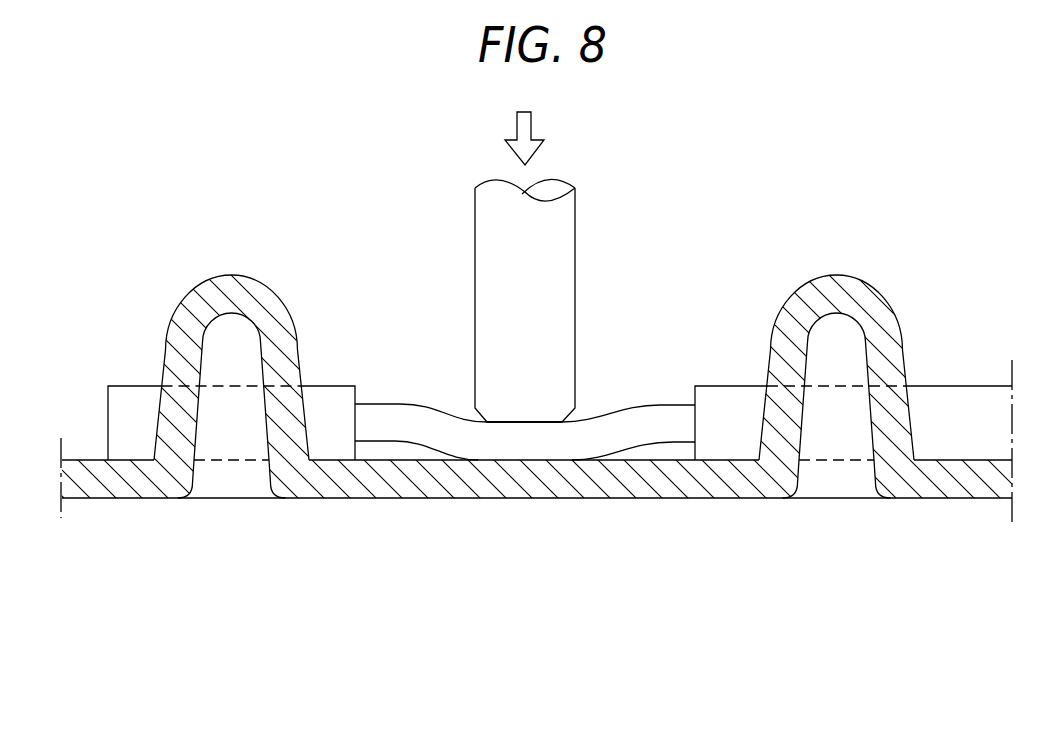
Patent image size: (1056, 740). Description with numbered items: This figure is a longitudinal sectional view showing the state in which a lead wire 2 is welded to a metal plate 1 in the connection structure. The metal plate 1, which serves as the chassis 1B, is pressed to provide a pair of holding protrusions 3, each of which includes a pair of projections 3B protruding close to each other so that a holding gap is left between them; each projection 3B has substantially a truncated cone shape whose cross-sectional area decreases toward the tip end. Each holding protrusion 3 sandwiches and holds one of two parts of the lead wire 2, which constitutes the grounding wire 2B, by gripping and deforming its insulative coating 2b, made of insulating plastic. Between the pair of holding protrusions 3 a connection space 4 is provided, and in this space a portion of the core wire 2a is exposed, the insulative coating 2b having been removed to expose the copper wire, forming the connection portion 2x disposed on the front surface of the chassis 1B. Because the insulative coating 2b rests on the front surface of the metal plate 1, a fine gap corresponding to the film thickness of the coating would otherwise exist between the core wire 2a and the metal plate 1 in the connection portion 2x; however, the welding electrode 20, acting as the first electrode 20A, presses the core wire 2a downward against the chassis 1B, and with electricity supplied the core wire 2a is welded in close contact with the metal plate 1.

The chassis 1B is at (536, 476).
The metal plate 1 is at (620, 483).
The grounding wire 2B is at (560, 503).
The lead wire 2 is at (560, 503).
The core wire 2a is at (513, 445).
The insulative coating 2b is at (333, 445).
The connection portion 2x is at (548, 413).
The projection 3B is at (534, 325).
The holding protrusion 3 is at (232, 297).
The connection space 4 is at (412, 330).
The first electrode 20A is at (611, 267).
The welding electrode 20 is at (543, 262).